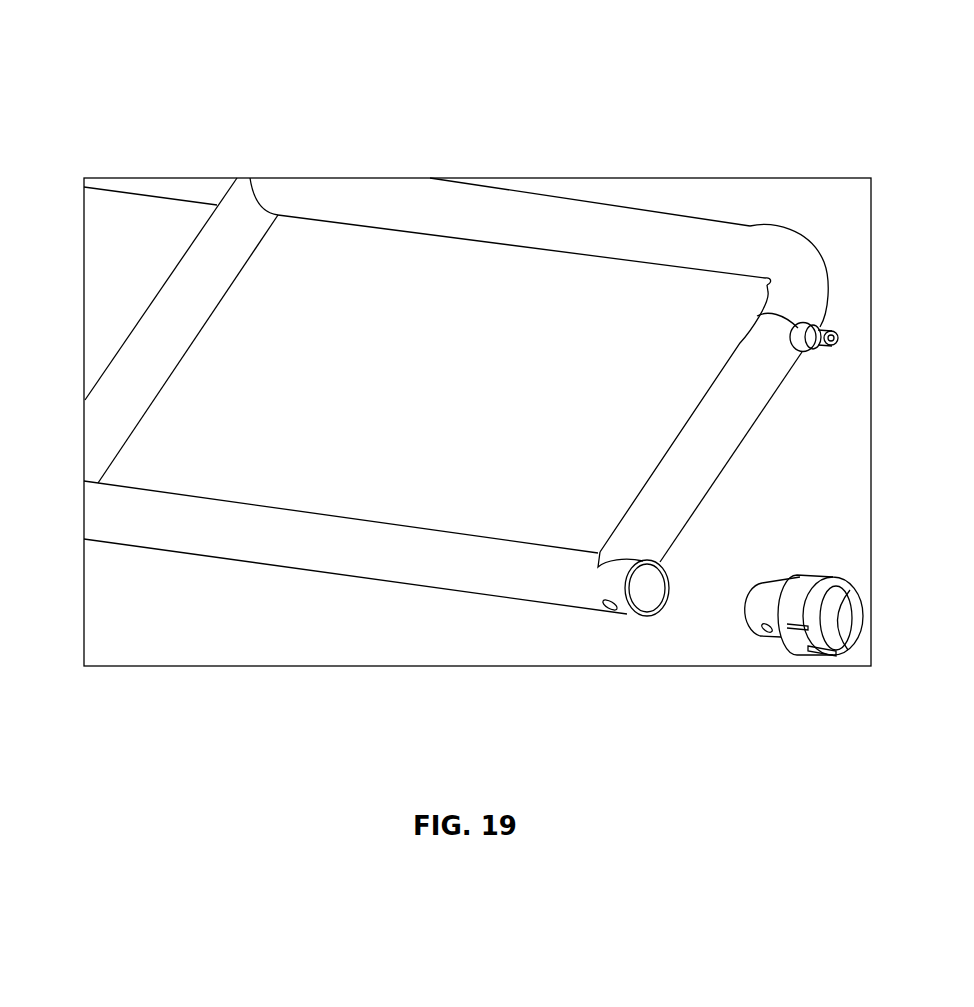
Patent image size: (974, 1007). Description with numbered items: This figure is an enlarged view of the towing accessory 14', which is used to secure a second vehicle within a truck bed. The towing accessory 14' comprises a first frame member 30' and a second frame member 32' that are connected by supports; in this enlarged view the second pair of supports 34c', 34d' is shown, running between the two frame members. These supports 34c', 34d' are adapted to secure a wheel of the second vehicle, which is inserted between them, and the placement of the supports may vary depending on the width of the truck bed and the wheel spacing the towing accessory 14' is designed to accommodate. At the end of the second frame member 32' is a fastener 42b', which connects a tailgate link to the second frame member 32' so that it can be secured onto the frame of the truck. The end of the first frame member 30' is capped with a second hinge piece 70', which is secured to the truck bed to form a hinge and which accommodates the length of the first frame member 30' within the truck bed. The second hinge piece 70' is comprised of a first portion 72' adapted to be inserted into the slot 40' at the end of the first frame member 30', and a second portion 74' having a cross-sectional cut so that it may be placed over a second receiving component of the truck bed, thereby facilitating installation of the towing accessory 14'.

The towing accessory 14' is at (477, 373).
The second frame member 32' is at (427, 202).
The support 34c' is at (147, 330).
The support 34d' is at (774, 396).
The fastener 42b' is at (868, 310).
The first frame member 30' is at (355, 607).
The slot 40' is at (647, 643).
The second hinge piece 70' is at (833, 601).
The first portion 72' is at (755, 647).
The second portion 74' is at (861, 637).